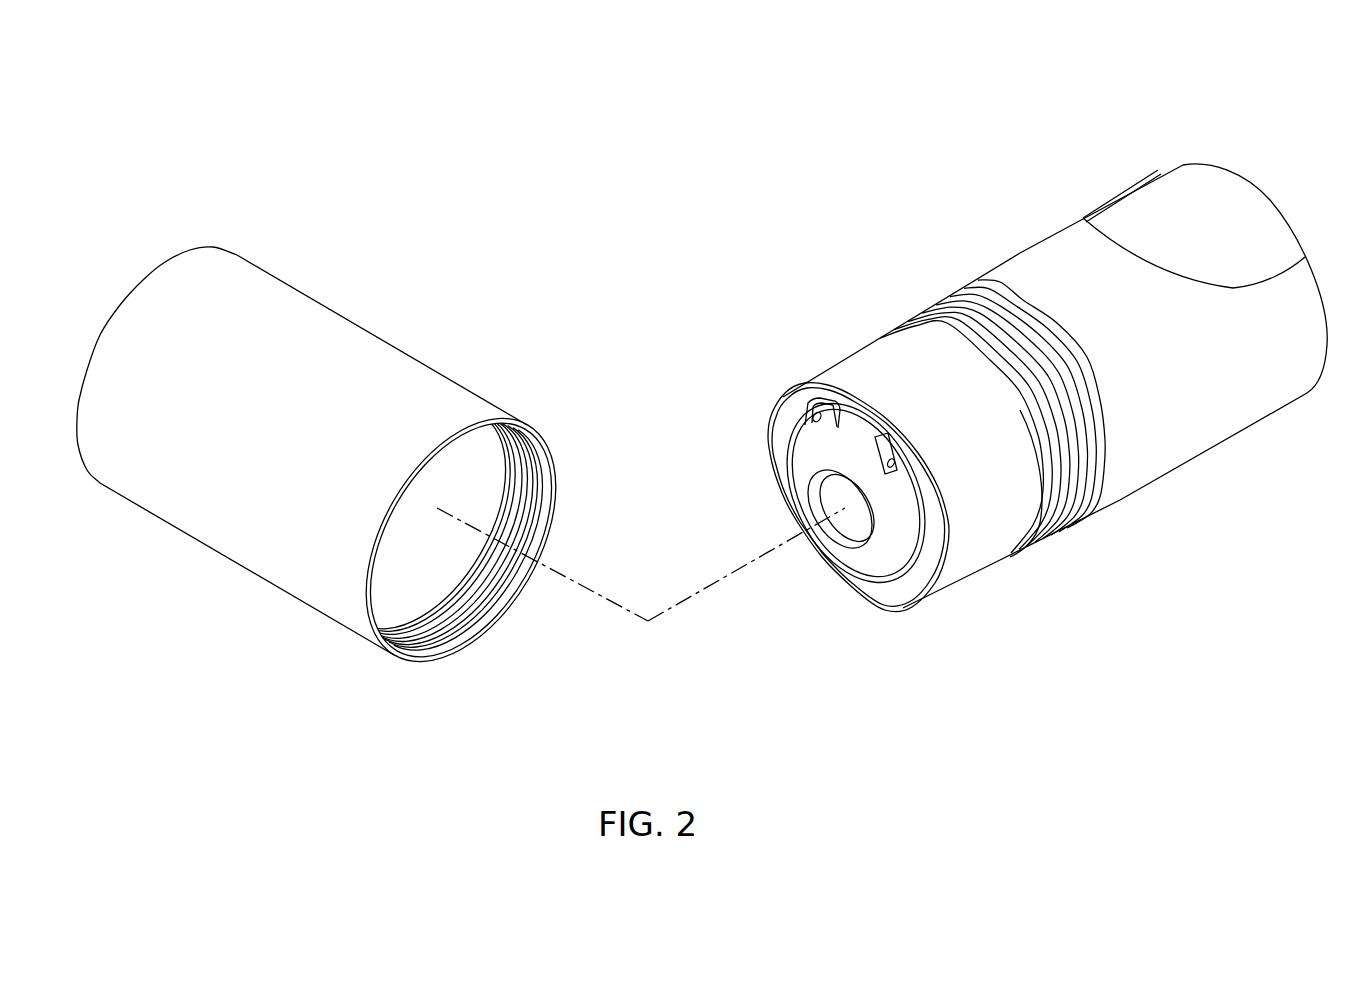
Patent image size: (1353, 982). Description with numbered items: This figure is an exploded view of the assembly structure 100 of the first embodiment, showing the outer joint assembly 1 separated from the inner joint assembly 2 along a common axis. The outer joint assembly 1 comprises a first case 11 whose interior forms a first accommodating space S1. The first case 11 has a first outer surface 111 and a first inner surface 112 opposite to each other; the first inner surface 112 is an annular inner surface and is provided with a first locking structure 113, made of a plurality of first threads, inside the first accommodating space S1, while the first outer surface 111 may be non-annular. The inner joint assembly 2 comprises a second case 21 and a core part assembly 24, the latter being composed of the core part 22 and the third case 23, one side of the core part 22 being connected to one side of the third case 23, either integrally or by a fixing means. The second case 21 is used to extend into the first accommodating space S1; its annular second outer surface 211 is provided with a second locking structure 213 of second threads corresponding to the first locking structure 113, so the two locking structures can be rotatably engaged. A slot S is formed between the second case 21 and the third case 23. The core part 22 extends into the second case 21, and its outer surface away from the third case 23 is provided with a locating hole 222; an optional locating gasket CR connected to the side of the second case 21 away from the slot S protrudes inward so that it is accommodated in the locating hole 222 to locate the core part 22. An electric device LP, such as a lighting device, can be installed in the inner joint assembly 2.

The assembly structure 100 is at (431, 50).
The outer joint assembly 1 is at (422, 348).
The first case 11 is at (430, 378).
The first outer surface 111 is at (318, 340).
The first inner surface 112 is at (393, 610).
The first locking structure 113 is at (547, 482).
The first accommodating space S1 is at (488, 468).
The inner joint assembly 2 is at (860, 308).
The second case 21 is at (848, 382).
The second outer surface 211 is at (856, 364).
The second locking structure 213 is at (937, 312).
The slot S is at (999, 272).
The core part assembly 24 is at (648, 45).
The core part 22 is at (737, 512).
The locating hole 222 is at (858, 433).
The third case 23 is at (1246, 489).
The electric device LP is at (1223, 207).
The locating gasket CR is at (877, 590).